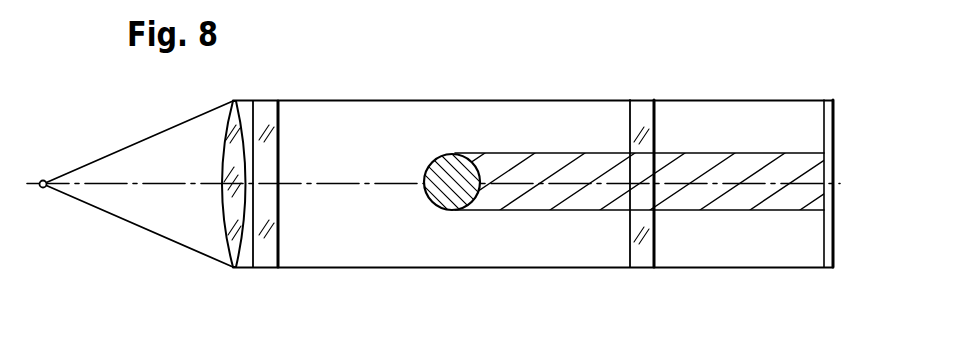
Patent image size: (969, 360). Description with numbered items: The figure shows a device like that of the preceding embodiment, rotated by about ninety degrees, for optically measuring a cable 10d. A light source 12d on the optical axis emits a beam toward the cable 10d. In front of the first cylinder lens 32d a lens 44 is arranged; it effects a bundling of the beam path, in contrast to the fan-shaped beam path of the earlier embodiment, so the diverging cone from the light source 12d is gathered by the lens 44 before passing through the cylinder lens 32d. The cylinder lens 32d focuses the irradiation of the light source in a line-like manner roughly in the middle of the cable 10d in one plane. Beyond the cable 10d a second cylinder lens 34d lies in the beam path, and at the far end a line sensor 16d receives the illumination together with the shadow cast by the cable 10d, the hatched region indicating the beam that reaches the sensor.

The light source 12d is at (47, 189).
The lens 44 is at (227, 133).
The cylinder lens 32d is at (280, 138).
The cable 10d is at (449, 162).
The cylinder lens 34d is at (650, 118).
The line sensor 16d is at (832, 108).